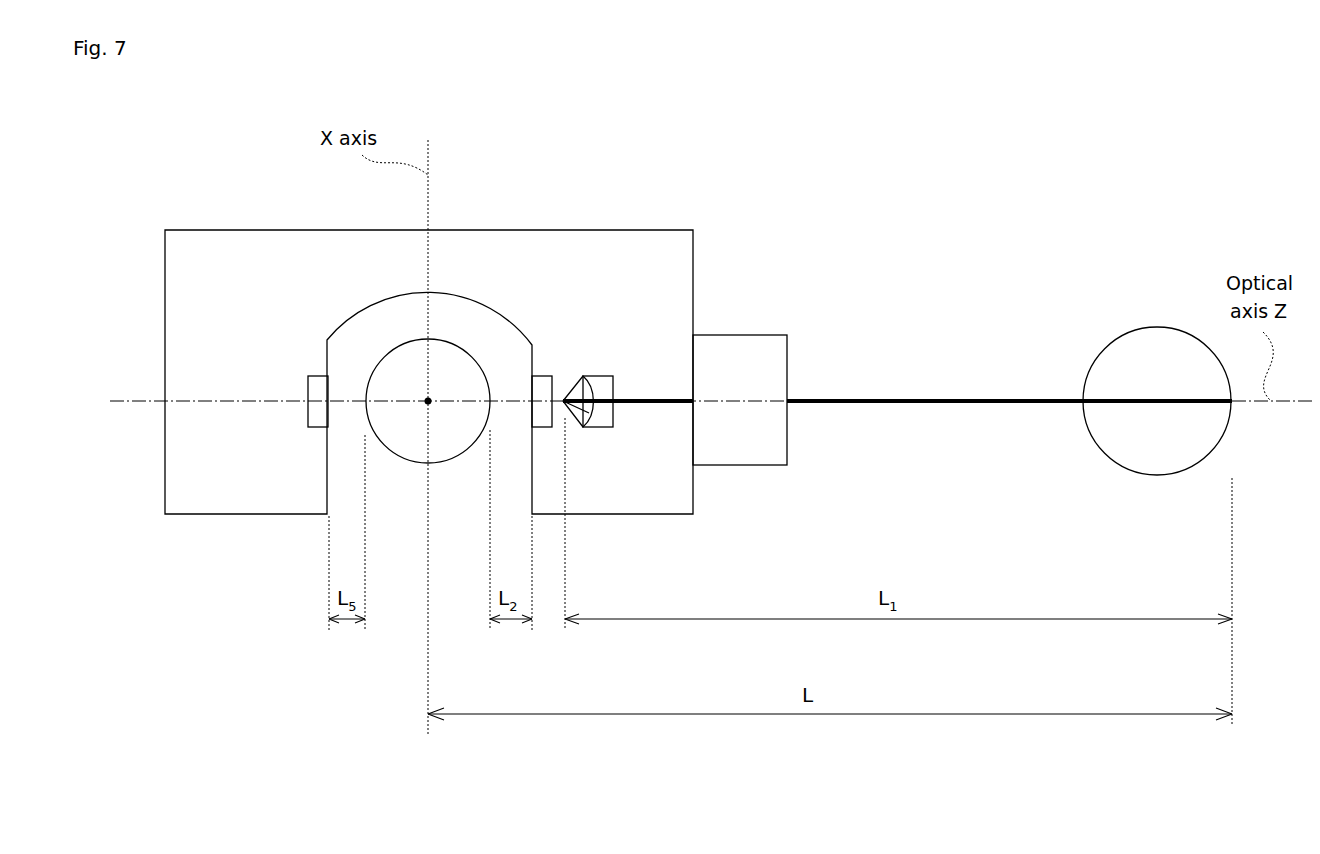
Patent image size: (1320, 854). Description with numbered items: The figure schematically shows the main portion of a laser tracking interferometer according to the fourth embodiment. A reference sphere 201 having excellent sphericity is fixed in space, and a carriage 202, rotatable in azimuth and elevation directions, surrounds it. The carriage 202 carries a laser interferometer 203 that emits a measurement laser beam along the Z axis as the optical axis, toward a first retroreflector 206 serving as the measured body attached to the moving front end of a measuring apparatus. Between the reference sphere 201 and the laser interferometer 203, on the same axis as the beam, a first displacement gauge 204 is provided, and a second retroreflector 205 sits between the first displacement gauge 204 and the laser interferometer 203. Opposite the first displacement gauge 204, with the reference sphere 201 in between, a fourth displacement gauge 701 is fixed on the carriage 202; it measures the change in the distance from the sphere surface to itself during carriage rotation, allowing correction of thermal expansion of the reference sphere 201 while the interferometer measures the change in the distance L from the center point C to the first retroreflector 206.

The reference sphere 201 is at (385, 388).
The carriage 202 is at (243, 245).
The laser interferometer 203 is at (763, 378).
The first displacement gauge 204 is at (541, 390).
The second retroreflector 205 is at (600, 392).
The first retroreflector 206 is at (1175, 352).
The fourth displacement gauge 701 is at (320, 415).